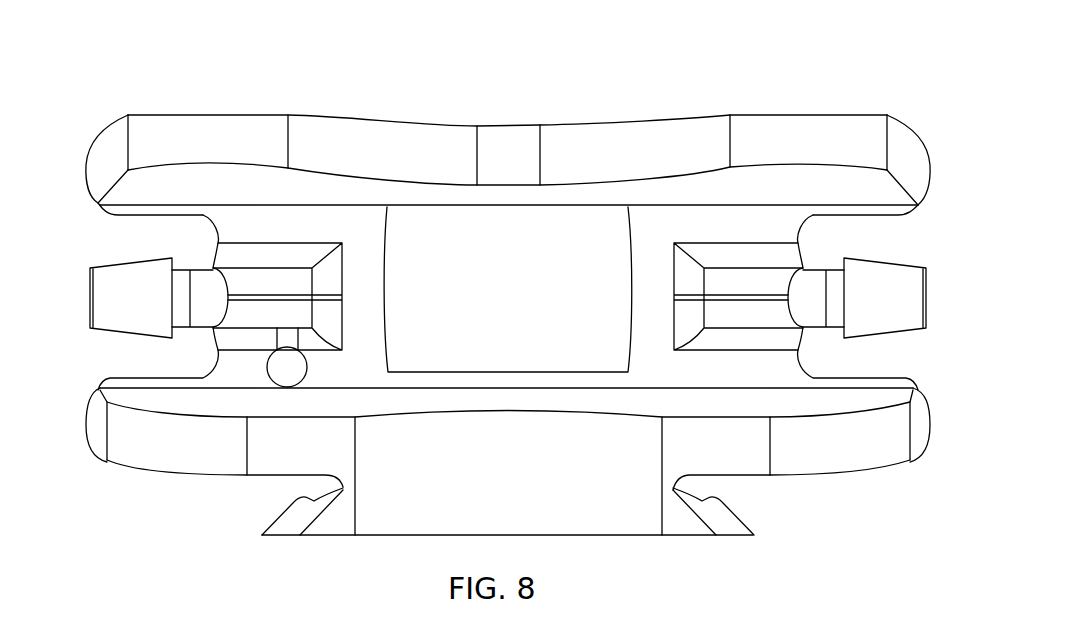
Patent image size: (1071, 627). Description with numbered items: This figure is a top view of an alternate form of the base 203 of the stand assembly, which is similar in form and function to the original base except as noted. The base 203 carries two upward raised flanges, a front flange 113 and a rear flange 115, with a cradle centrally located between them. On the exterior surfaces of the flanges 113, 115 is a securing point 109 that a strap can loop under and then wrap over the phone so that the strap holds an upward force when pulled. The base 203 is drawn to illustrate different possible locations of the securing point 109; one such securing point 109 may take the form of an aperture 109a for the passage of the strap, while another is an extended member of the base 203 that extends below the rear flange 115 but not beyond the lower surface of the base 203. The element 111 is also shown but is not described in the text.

The base 203 is at (598, 68).
The rear flange 115 is at (823, 113).
The nut 111 is at (88, 291).
The aperture 109a is at (308, 366).
The front flange 113 is at (200, 457).
The securing point 109 is at (690, 537).